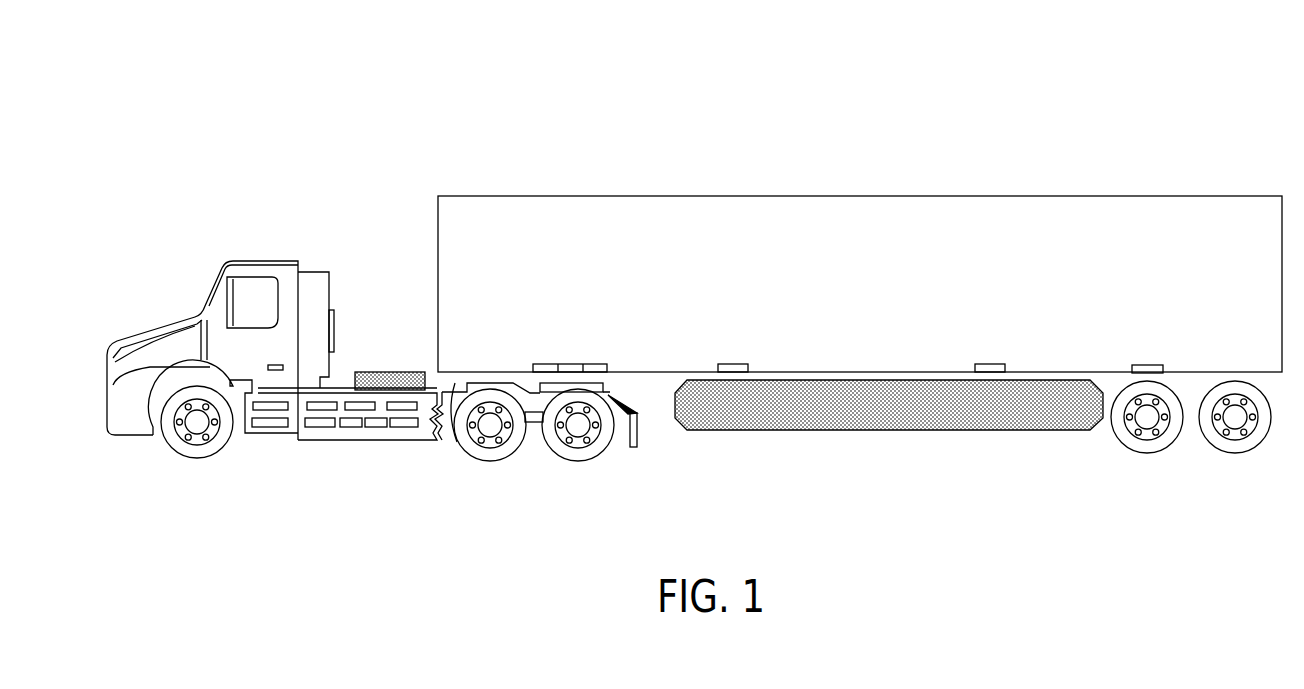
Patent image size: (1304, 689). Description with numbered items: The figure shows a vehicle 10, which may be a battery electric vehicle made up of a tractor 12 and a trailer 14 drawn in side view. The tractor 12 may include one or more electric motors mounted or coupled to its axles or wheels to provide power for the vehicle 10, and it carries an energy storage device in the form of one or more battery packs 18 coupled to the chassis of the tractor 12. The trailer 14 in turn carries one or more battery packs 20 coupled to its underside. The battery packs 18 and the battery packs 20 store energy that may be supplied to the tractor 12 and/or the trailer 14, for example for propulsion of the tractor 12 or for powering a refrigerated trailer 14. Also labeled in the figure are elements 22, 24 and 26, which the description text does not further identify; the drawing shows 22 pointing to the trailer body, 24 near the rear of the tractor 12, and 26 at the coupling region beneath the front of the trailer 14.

The vehicle 10 is at (520, 88).
The tractor 12 is at (213, 227).
The trailer 14 is at (902, 150).
The battery packs 18 is at (417, 323).
The battery packs 20 is at (842, 450).
The trailer cargo body 22 is at (607, 300).
The electrical connector 24 is at (637, 423).
The kingpin coupling 26 is at (568, 364).